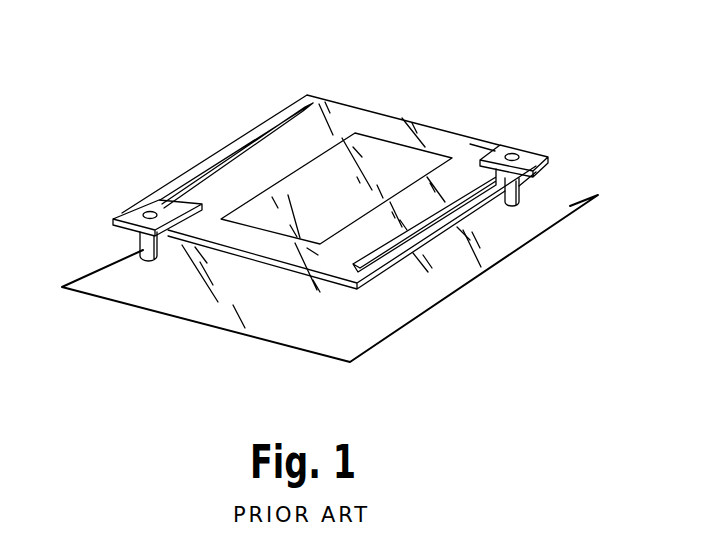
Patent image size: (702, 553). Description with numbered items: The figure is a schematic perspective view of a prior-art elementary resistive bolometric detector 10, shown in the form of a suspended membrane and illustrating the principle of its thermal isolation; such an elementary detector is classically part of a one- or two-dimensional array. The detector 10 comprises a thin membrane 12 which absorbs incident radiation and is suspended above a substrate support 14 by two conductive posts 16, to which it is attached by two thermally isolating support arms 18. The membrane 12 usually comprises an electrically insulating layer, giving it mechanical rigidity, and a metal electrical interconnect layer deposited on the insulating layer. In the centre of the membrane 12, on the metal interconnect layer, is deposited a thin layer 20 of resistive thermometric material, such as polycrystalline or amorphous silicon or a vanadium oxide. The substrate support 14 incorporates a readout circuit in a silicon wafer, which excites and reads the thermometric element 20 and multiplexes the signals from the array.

The elementary resistive bolometric detector 10 is at (325, 50).
The thin membrane 12 is at (462, 143).
The substrate support 14 is at (388, 295).
The conductive posts 16 is at (143, 250).
The thermally isolating support arms 18 is at (200, 166).
The thin layer of resistive thermometric material 20 is at (384, 154).